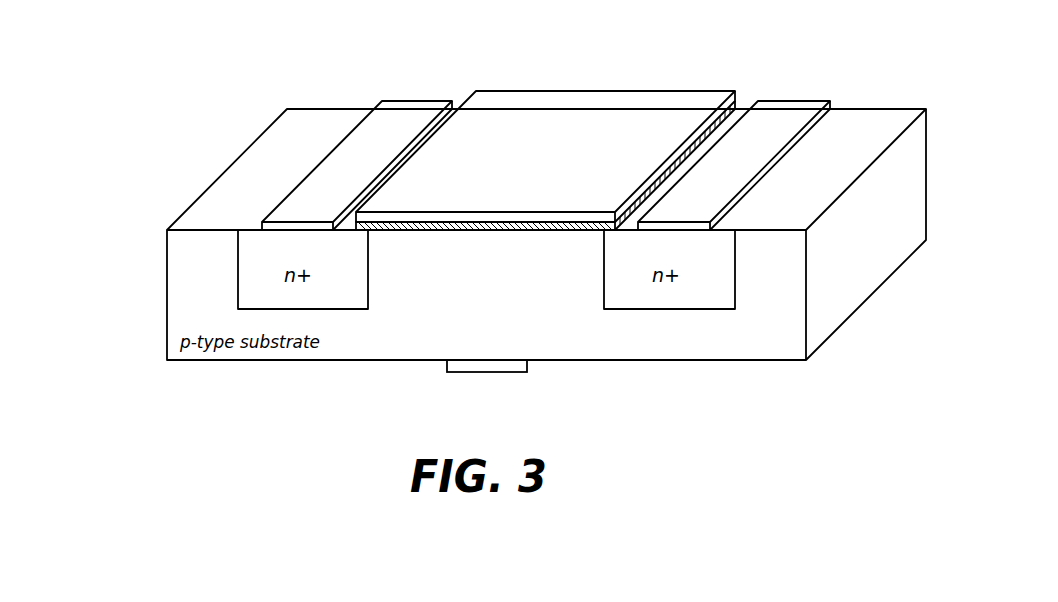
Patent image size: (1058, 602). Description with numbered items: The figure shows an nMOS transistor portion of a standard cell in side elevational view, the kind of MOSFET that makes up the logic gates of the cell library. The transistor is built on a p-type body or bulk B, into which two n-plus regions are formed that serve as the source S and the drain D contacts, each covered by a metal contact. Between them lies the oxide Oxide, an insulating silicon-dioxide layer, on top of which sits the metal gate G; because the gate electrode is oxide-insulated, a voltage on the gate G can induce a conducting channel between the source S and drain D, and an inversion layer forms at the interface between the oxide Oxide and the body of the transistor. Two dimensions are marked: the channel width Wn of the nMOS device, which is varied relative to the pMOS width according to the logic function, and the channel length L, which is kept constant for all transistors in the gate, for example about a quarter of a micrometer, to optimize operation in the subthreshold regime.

The source S is at (420, 100).
The gate G is at (588, 91).
The drain D is at (797, 100).
The bulk B is at (475, 372).
The oxide Oxide is at (740, 98).
The nMOS channel width Wn is at (281, 109).
The channel length L is at (604, 273).